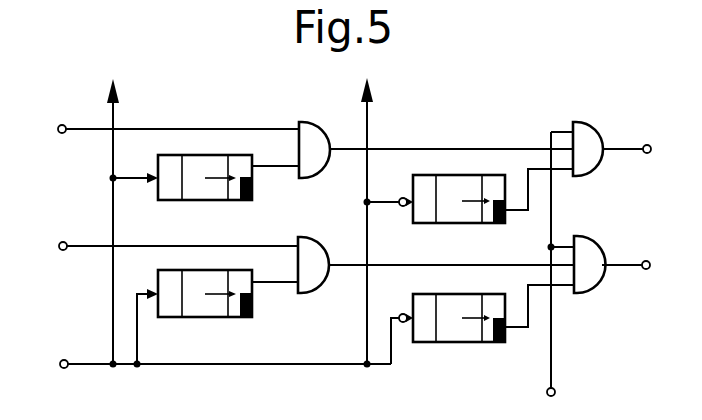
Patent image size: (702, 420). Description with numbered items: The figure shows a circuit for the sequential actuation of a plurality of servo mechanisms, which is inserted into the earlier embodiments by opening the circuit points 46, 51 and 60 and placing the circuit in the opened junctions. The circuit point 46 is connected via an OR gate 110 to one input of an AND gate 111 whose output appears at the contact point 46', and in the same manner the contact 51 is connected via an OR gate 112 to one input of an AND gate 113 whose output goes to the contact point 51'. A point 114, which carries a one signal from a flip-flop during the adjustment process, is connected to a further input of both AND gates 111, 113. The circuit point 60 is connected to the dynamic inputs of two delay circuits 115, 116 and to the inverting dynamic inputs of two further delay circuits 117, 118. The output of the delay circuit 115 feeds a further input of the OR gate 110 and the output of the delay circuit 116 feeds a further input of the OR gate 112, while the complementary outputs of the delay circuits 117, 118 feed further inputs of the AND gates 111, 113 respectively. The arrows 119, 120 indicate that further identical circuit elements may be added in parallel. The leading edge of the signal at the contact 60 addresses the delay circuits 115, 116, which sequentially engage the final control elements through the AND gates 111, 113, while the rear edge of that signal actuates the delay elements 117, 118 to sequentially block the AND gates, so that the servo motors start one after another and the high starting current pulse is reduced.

The circuit point 46 is at (163, 147).
The contact 51 is at (162, 261).
The circuit point 60 is at (60, 369).
The contact point 46' is at (644, 169).
The contact point 51' is at (643, 281).
The OR gate 110 is at (306, 135).
The AND gate 111 is at (590, 133).
The OR gate 112 is at (308, 252).
The AND gate 113 is at (590, 245).
The point 114 is at (556, 393).
The delay circuit 115 is at (171, 158).
The delay circuit 116 is at (171, 278).
The delay circuit 117 is at (421, 183).
The delay circuit 118 is at (421, 303).
The arrow 119 is at (120, 93).
The arrow 120 is at (373, 93).